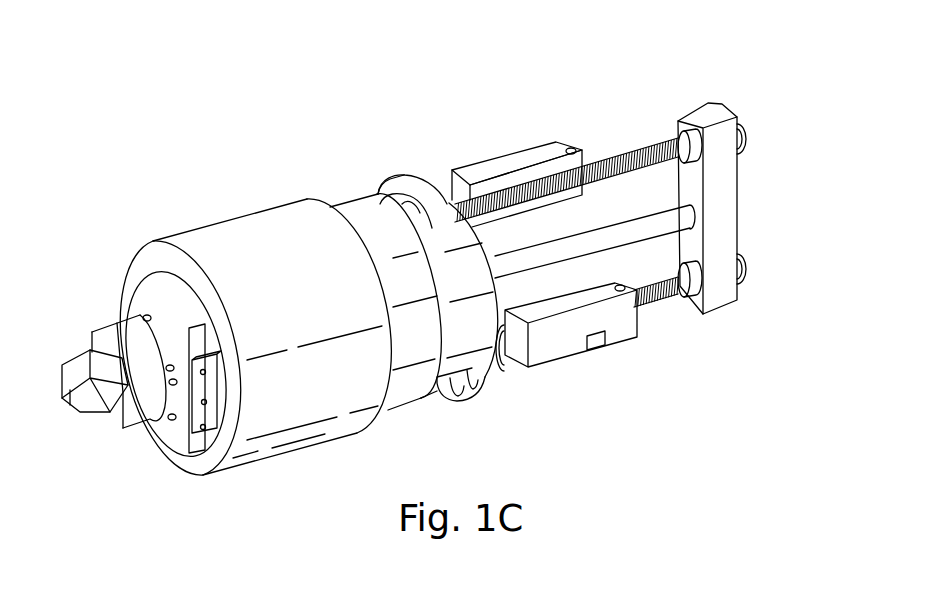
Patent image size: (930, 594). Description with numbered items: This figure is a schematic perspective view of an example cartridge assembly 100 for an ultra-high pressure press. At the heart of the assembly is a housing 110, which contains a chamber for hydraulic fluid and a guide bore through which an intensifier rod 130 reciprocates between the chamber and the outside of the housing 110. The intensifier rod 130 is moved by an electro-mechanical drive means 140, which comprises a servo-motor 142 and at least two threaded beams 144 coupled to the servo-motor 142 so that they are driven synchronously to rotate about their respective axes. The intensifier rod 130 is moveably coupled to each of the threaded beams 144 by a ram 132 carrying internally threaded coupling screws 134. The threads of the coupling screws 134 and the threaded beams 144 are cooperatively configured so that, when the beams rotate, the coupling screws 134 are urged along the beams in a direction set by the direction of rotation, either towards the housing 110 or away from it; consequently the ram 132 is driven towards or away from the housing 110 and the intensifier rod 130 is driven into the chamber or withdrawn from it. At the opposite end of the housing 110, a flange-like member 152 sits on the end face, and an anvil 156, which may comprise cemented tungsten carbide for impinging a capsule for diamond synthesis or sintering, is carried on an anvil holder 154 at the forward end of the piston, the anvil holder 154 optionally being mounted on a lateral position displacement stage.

The cartridge assembly 100 is at (246, 82).
The housing 110 is at (324, 228).
The intensifier rod 130 is at (543, 254).
The ram 132 is at (718, 207).
The coupling screws 134 is at (737, 126).
The electro-mechanical drive means 140 is at (518, 72).
The servo-motor 142 is at (543, 150).
The threaded beams 144 is at (645, 150).
The flange 152 is at (140, 283).
The anvil holder 154 is at (130, 404).
The anvil 156 is at (80, 372).